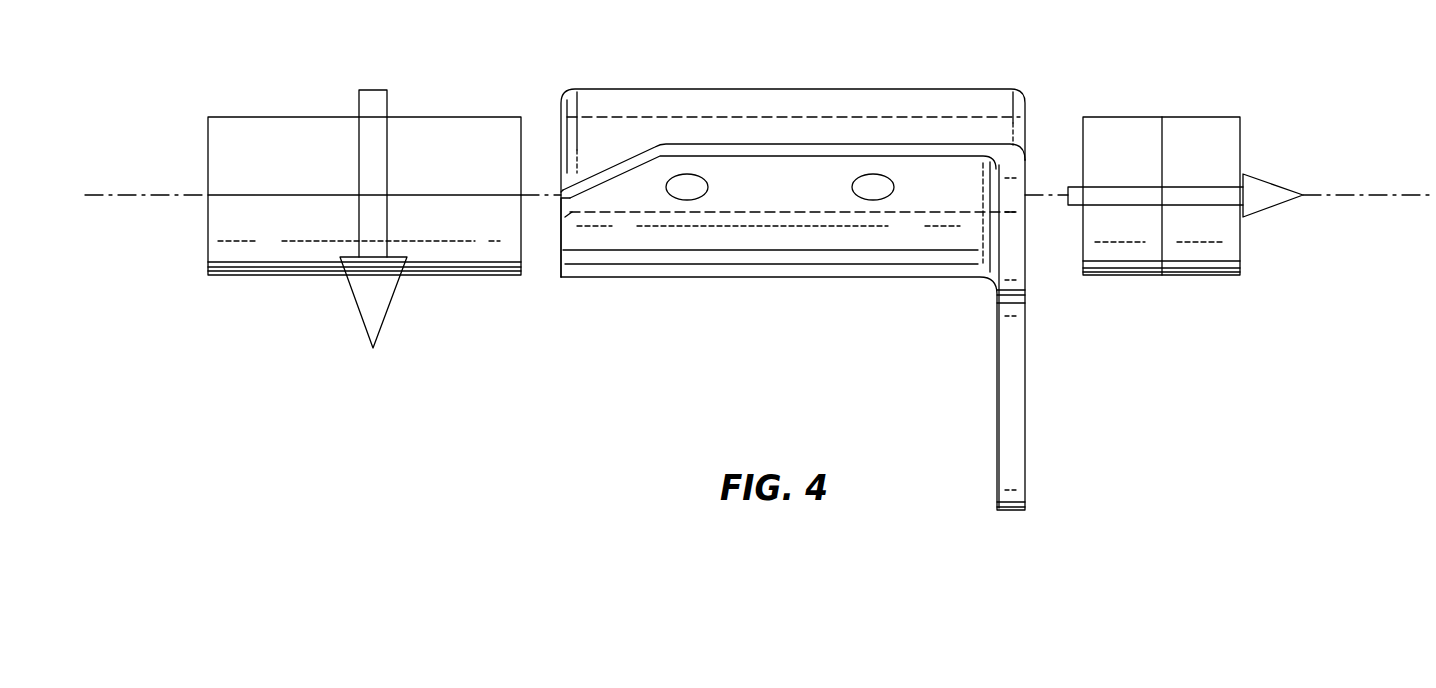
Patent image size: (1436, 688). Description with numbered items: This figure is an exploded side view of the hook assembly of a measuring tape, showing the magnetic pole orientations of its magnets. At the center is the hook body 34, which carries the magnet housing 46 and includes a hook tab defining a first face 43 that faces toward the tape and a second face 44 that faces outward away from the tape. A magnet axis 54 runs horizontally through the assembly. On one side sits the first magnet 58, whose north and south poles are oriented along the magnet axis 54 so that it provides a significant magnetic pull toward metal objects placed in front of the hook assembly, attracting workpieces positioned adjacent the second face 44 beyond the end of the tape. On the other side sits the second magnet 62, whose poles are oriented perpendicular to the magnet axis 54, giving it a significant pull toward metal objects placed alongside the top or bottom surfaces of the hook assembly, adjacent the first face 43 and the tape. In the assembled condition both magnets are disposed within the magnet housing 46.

The hook body 34 is at (835, 267).
The first face 43 is at (997, 487).
The second face 44 is at (1025, 405).
The magnet housing 46 is at (748, 89).
The magnet axis 54 is at (123, 195).
The first magnet 58 is at (1180, 117).
The second magnet 62 is at (298, 117).